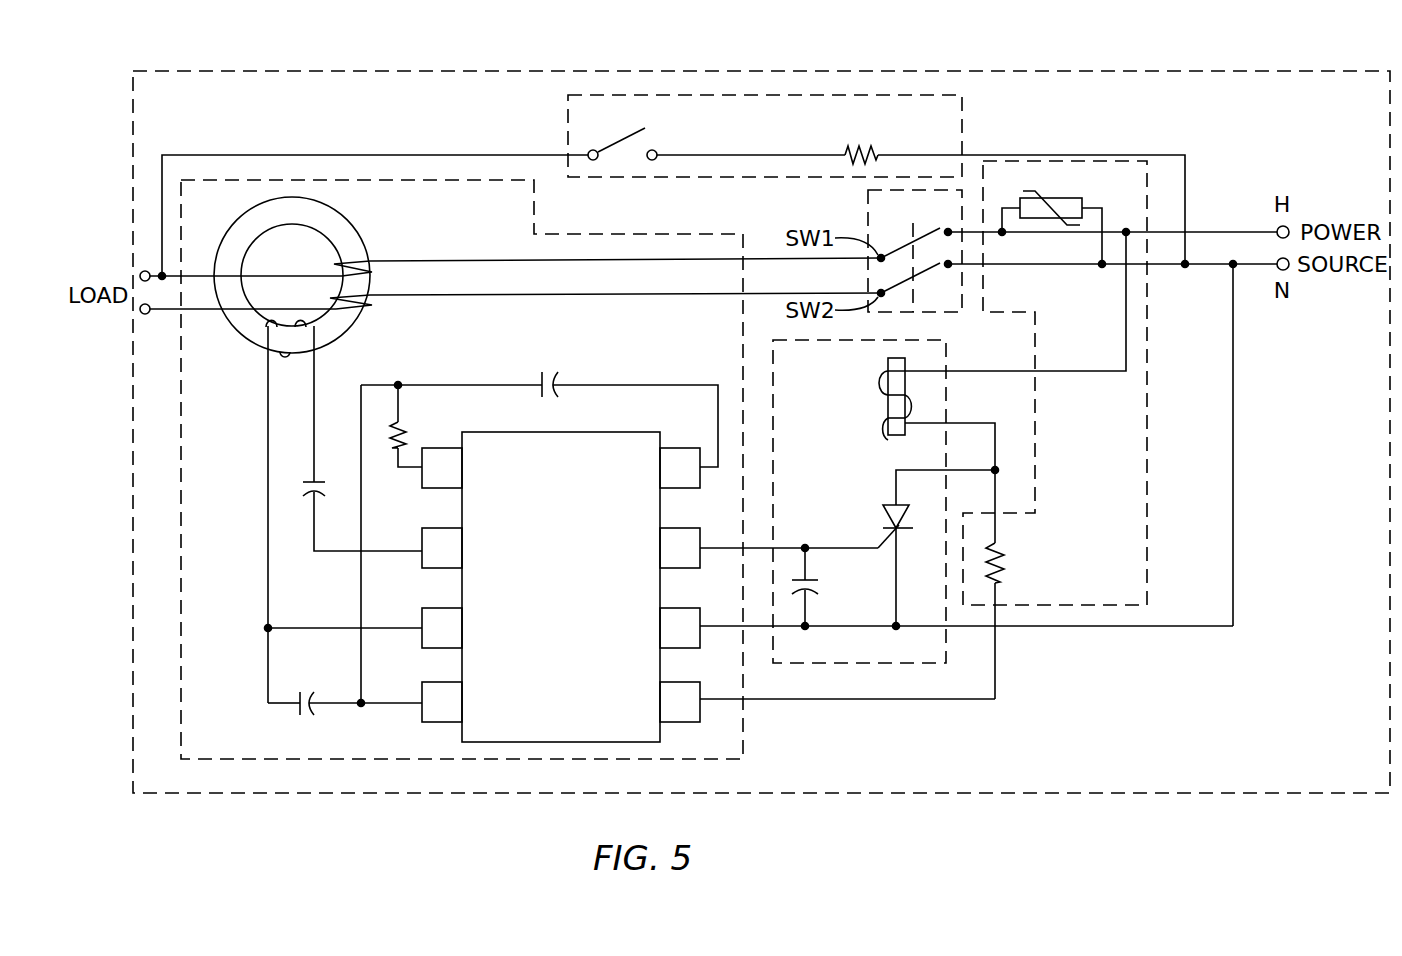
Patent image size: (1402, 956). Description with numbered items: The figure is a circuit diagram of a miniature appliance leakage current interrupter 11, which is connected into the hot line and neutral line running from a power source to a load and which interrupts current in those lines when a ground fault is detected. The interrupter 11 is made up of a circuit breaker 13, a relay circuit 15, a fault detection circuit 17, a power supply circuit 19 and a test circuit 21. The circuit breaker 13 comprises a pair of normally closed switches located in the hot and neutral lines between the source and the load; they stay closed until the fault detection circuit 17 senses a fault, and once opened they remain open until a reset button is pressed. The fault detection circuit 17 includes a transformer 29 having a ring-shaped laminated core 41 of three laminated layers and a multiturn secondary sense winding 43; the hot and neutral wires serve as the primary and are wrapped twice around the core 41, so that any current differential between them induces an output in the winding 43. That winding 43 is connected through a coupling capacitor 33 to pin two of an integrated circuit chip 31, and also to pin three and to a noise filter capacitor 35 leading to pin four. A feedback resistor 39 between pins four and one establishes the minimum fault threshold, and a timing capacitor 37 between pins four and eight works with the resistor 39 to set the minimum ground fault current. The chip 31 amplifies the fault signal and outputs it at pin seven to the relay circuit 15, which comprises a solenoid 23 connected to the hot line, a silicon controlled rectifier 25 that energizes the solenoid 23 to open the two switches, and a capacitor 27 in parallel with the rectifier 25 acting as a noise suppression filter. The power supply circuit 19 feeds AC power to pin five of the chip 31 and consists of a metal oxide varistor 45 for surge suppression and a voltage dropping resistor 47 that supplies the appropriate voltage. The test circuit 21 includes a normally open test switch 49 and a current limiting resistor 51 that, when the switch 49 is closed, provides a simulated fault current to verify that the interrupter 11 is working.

The appliance leakage current interrupter 11 is at (305, 802).
The circuit breaker 13 is at (866, 194).
The relay circuit 15 is at (842, 663).
The fault detection circuit 17 is at (181, 541).
The power supply circuit 19 is at (1147, 378).
The test circuit 21 is at (963, 103).
The solenoid 23 is at (888, 434).
The silicon controlled rectifier 25 is at (885, 505).
The capacitor 27 is at (820, 584).
The transformer 29 is at (307, 278).
The integrated circuit chip 31 is at (568, 455).
The coupling capacitor 33 is at (303, 486).
The noise filter capacitor 35 is at (303, 685).
The timing capacitor 37 is at (556, 375).
The feedback resistor 39 is at (408, 428).
The laminated core 41 is at (257, 238).
The secondary sense winding 43 is at (283, 352).
The metal oxide varistor 45 is at (1065, 198).
The voltage dropping resistor 47 is at (1005, 565).
The test switch 49 is at (657, 148).
The current limiting resistor 51 is at (862, 145).